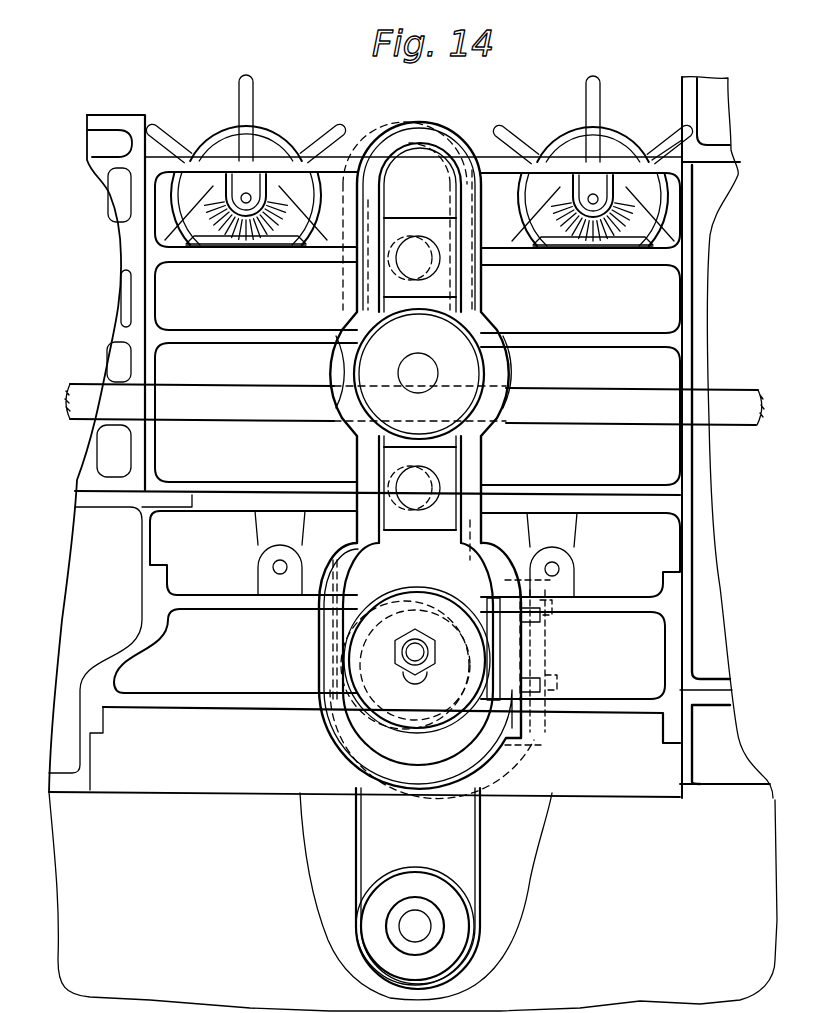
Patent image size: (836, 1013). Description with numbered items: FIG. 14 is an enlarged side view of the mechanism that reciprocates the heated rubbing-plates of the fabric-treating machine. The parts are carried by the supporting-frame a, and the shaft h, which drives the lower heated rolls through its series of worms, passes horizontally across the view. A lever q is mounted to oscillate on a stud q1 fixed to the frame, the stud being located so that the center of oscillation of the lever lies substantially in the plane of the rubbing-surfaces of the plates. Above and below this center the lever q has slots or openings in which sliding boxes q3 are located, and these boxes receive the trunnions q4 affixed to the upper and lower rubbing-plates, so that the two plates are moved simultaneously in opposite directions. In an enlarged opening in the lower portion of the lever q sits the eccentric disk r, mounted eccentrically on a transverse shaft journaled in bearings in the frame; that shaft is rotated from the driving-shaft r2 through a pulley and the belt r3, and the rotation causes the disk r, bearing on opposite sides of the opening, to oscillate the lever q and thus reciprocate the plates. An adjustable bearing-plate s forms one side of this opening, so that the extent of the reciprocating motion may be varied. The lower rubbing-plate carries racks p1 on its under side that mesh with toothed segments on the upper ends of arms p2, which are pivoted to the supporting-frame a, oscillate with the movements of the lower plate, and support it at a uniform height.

The supporting-frame a is at (665, 300).
The shaft h is at (228, 405).
The racks p1 is at (410, 651).
The arms p2 is at (565, 533).
The lever q is at (505, 760).
The stud q1 is at (432, 372).
The sliding boxes q3 is at (445, 458).
The trunnions q4 is at (436, 486).
The eccentric disk r is at (395, 722).
The driving-shaft r2 is at (435, 928).
The belt r3 is at (468, 838).
The adjustable bearing-plate s is at (536, 651).